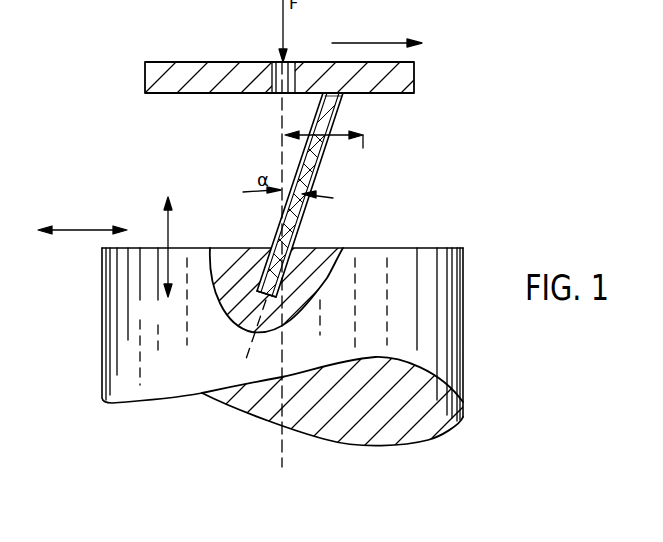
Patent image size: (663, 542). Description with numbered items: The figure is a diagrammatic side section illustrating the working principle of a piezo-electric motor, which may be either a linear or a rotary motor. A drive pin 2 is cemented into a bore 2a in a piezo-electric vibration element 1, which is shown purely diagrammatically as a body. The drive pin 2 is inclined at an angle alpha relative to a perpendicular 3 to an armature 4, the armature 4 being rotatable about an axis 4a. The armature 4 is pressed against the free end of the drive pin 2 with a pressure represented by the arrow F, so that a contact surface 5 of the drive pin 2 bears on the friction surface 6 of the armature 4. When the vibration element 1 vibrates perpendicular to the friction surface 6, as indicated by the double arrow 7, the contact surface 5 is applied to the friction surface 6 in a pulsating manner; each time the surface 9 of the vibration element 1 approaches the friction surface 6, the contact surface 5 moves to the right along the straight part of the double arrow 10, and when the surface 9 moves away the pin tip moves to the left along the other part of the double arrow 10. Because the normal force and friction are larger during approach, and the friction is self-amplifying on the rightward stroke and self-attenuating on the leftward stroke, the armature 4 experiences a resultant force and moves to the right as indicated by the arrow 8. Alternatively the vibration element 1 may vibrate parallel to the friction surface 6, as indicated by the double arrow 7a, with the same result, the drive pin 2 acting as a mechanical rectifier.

The piezo-electric vibration element 1 is at (450, 327).
The drive pin 2 is at (306, 162).
The bore 2a is at (282, 270).
The perpendicular 3 is at (282, 163).
The armature 4 is at (414, 77).
The axis 4a is at (268, 63).
The contact surface 5 is at (330, 97).
The friction surface 6 is at (203, 92).
The double arrow 7 is at (167, 203).
The double arrow 7a is at (88, 229).
The arrow 8 is at (357, 43).
The surface 9 is at (393, 248).
The double arrow 10 is at (338, 148).